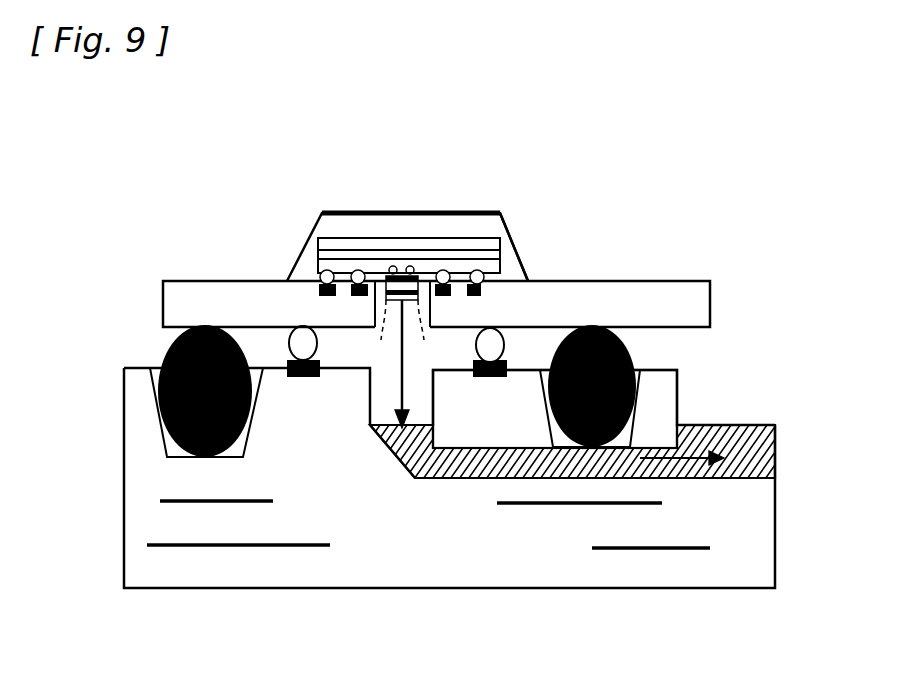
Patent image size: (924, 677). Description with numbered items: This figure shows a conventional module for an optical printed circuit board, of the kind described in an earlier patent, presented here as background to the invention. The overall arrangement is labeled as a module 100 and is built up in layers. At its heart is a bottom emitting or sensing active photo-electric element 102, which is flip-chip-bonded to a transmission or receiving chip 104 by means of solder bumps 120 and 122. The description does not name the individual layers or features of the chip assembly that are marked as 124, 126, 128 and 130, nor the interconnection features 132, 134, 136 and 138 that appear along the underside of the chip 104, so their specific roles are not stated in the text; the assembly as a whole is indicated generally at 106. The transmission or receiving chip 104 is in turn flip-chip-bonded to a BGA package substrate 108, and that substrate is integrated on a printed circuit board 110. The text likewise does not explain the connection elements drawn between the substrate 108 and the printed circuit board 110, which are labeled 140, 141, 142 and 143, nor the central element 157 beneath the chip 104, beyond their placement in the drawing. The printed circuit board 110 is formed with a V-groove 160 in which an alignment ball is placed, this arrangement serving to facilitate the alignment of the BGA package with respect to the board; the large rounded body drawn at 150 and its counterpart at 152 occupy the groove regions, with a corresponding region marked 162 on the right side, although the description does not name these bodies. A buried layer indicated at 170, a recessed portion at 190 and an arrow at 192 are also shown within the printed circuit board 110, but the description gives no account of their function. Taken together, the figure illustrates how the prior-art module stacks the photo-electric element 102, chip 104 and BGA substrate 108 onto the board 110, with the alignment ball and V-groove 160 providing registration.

The semiconductor package 100 is at (824, 182).
The active photo-electric element 102 is at (419, 364).
The transmission or receiving chip 104 is at (515, 250).
The chip assembly 106 is at (660, 234).
The BGA package substrate 108 is at (710, 300).
The printed circuit board 110 is at (818, 516).
The solder bump 120 is at (387, 273).
The solder bump 122 is at (417, 273).
The top surface of chip 124 is at (322, 215).
The upper layer of chip 126 is at (352, 273).
The lower layer of chip 128 is at (448, 273).
The side wall of chip 130 is at (480, 273).
The first bump 132 is at (318, 296).
The second bump 134 is at (360, 297).
The third bump 136 is at (445, 298).
The fourth bump 138 is at (480, 297).
The first solder ball 140 is at (289, 344).
The first pad 141 is at (318, 379).
The second solder ball 142 is at (504, 345).
The second pad 143 is at (485, 379).
The first conductive via 150 is at (172, 345).
The second conductive via 152 is at (634, 350).
The center connection element 157 is at (386, 333).
The V-groove 160 is at (147, 368).
The second cavity region 162 is at (677, 371).
The buried layer 170 is at (778, 443).
The recess 190 is at (390, 440).
The signal direction arrow 192 is at (727, 425).